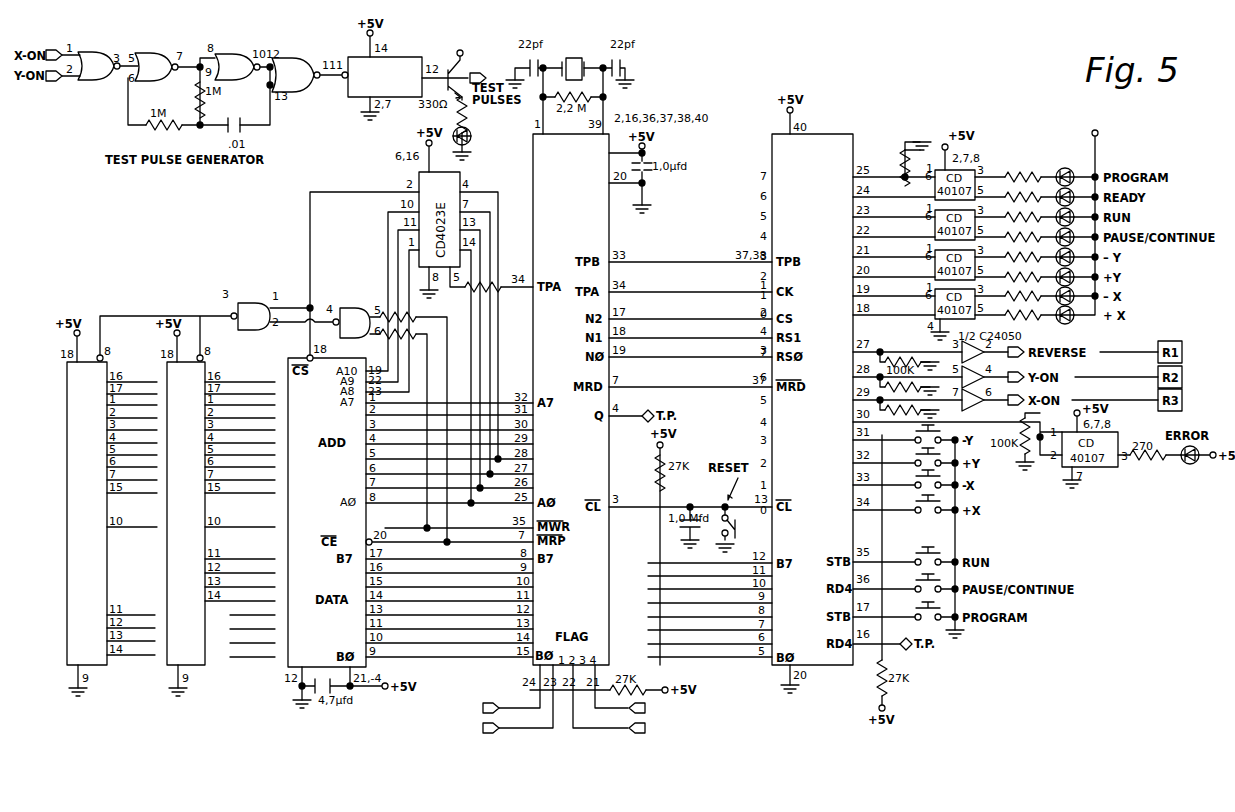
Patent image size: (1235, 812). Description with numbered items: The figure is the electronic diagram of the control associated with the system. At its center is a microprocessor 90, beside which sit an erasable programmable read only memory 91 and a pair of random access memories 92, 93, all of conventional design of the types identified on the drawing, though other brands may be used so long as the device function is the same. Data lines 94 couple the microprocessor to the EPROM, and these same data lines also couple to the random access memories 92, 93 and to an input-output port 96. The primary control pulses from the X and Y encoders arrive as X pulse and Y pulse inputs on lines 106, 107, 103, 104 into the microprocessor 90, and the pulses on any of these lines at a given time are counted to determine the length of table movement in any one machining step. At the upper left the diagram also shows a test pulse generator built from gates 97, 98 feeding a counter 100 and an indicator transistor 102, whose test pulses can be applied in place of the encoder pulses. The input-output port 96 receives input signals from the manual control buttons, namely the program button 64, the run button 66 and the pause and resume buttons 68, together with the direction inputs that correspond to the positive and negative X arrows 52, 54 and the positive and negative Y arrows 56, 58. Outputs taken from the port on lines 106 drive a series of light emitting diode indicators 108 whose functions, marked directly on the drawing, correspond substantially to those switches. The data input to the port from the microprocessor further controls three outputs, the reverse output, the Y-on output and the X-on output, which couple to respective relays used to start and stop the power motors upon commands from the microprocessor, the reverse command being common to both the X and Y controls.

The positive X arrow 52 is at (948, 507).
The negative X arrow 54 is at (948, 484).
The positive Y arrow 56 is at (948, 461).
The negative Y arrow 58 is at (948, 438).
The program button 64 is at (945, 608).
The run button 66 is at (940, 552).
The pause button 68 is at (945, 578).
The microprocessor 90 is at (580, 179).
The erasable programmable read only memory 91 is at (320, 411).
The random access memory 92 is at (196, 401).
The random access memory 93 is at (96, 401).
The data lines 94 is at (456, 666).
The input-output port 96 is at (819, 174).
The NOR gate of test pulse generator 97 is at (284, 45).
The NOR gate of test pulse generator 98 is at (99, 55).
The counter (CD4024) 100 is at (413, 58).
The test pulse indicator transistor 102 is at (446, 64).
The Y pulse input line 103 is at (626, 707).
The Y pulse input line 104 is at (604, 724).
The X pulse input line 106 is at (519, 706).
The X pulse input line 107 is at (527, 724).
The indicators 108 is at (1061, 165).